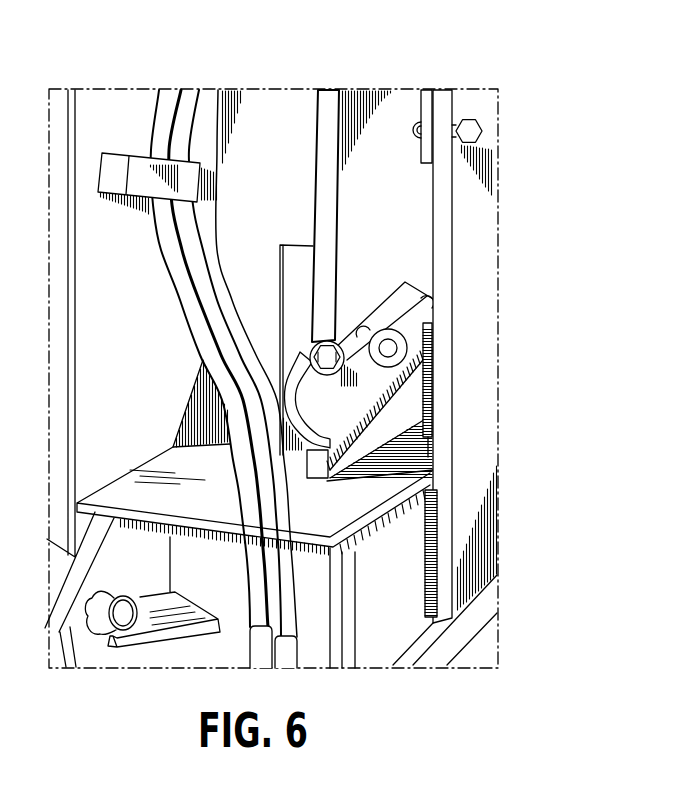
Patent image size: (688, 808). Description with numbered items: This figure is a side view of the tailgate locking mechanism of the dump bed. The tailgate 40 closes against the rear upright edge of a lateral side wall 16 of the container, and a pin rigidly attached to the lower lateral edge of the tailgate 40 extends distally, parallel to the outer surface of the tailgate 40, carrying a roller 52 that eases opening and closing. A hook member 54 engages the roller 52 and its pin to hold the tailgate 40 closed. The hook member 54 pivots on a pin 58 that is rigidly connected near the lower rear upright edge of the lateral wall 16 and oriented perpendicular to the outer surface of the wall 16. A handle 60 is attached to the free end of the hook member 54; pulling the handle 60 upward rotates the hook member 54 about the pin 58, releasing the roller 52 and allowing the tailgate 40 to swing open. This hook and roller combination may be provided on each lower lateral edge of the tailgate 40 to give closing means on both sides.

The lateral side wall 16 is at (392, 208).
The tailgate 40 is at (298, 113).
The roller 52 is at (308, 337).
The hook member 54 is at (345, 403).
The pin 58 is at (397, 340).
The handle 60 is at (433, 377).